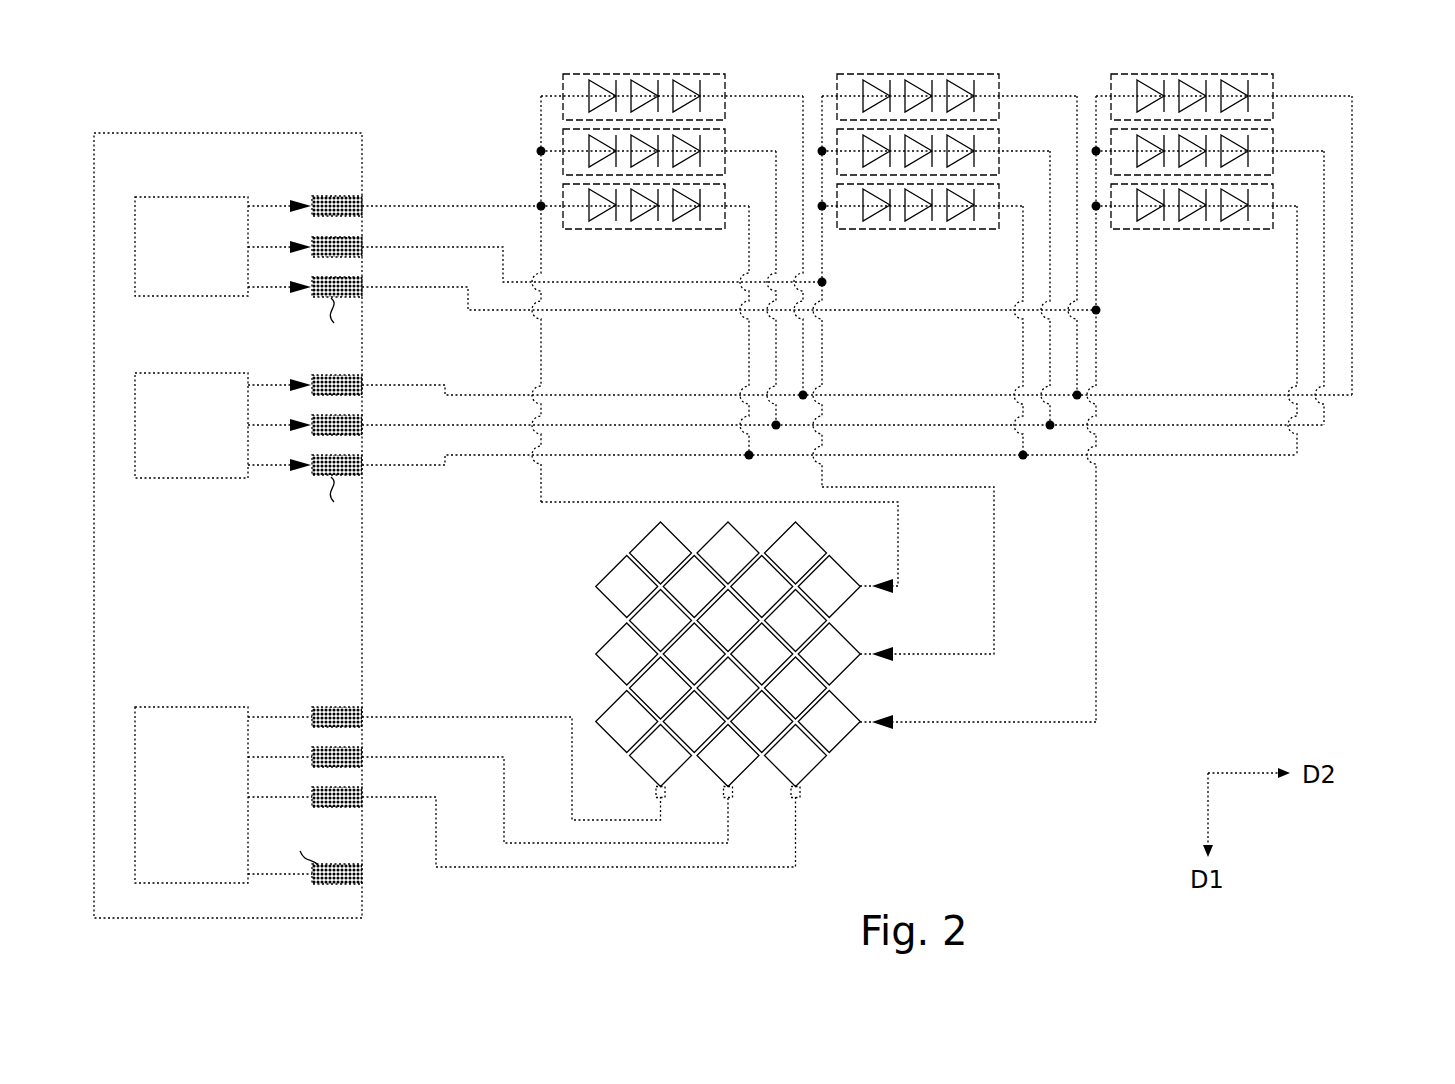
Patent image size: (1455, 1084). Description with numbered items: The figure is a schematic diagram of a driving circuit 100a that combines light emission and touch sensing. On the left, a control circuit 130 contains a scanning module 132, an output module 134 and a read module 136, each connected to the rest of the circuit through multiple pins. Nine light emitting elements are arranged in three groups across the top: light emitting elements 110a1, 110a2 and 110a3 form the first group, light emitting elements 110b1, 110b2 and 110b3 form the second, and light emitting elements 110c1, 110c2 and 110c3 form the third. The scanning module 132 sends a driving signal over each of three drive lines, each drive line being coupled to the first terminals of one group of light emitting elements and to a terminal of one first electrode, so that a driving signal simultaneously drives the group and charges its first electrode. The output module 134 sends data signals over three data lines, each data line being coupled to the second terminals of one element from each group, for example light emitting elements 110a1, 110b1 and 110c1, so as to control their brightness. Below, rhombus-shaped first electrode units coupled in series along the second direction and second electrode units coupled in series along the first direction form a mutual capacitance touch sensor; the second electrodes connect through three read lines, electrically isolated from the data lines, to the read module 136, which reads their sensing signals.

The driving circuit 100a is at (1442, 56).
The light emitting element 110a1 is at (727, 95).
The light emitting element 110a2 is at (727, 150).
The light emitting element 110a3 is at (630, 230).
The light emitting element 110b1 is at (1001, 95).
The light emitting element 110b2 is at (1001, 150).
The light emitting element 110b3 is at (905, 230).
The light emitting element 110c1 is at (1275, 95).
The light emitting element 110c2 is at (1275, 150).
The light emitting element 110c3 is at (1179, 230).
The control circuit 130 is at (145, 162).
The scanning module 132 is at (214, 256).
The output module 134 is at (214, 437).
The read module 136 is at (214, 810).